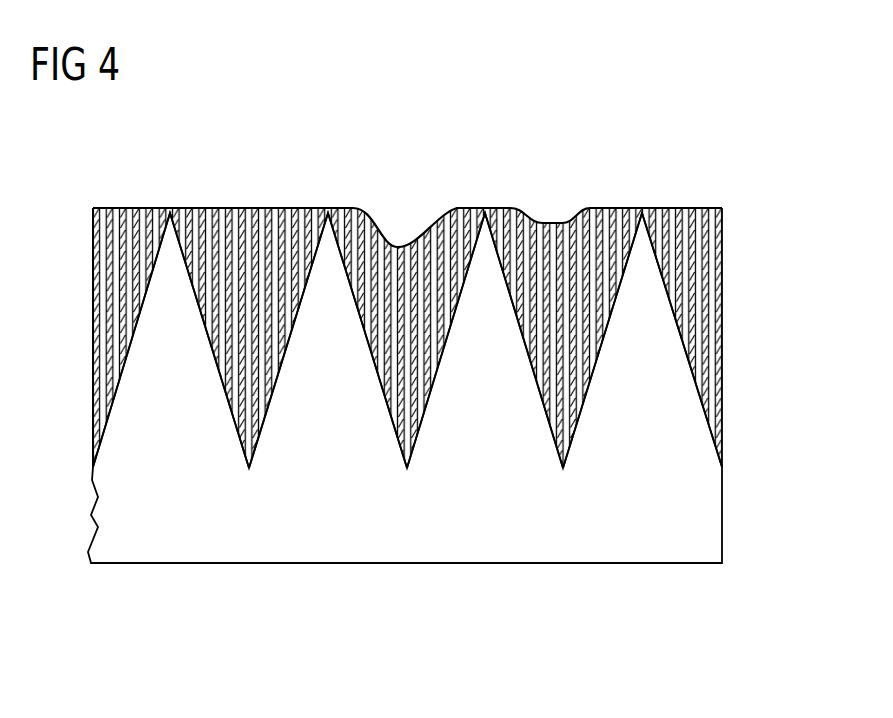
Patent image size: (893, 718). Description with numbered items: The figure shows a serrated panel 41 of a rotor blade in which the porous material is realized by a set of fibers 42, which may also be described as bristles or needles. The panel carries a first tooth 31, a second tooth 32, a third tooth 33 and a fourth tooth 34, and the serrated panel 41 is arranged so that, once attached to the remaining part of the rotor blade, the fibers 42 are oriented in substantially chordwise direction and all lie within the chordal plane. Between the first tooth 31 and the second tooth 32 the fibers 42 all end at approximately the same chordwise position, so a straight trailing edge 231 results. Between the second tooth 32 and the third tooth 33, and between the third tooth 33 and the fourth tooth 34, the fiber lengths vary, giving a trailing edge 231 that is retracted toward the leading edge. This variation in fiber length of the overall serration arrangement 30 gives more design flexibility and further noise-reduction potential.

The coating layer structure 30 is at (292, 170).
The first tooth 31 is at (167, 292).
The second tooth 32 is at (330, 290).
The third tooth 33 is at (481, 267).
The fourth tooth 34 is at (643, 317).
The trailing edge 231 is at (688, 208).
The serrated panel 41 is at (400, 591).
The fibers 42 is at (93, 339).